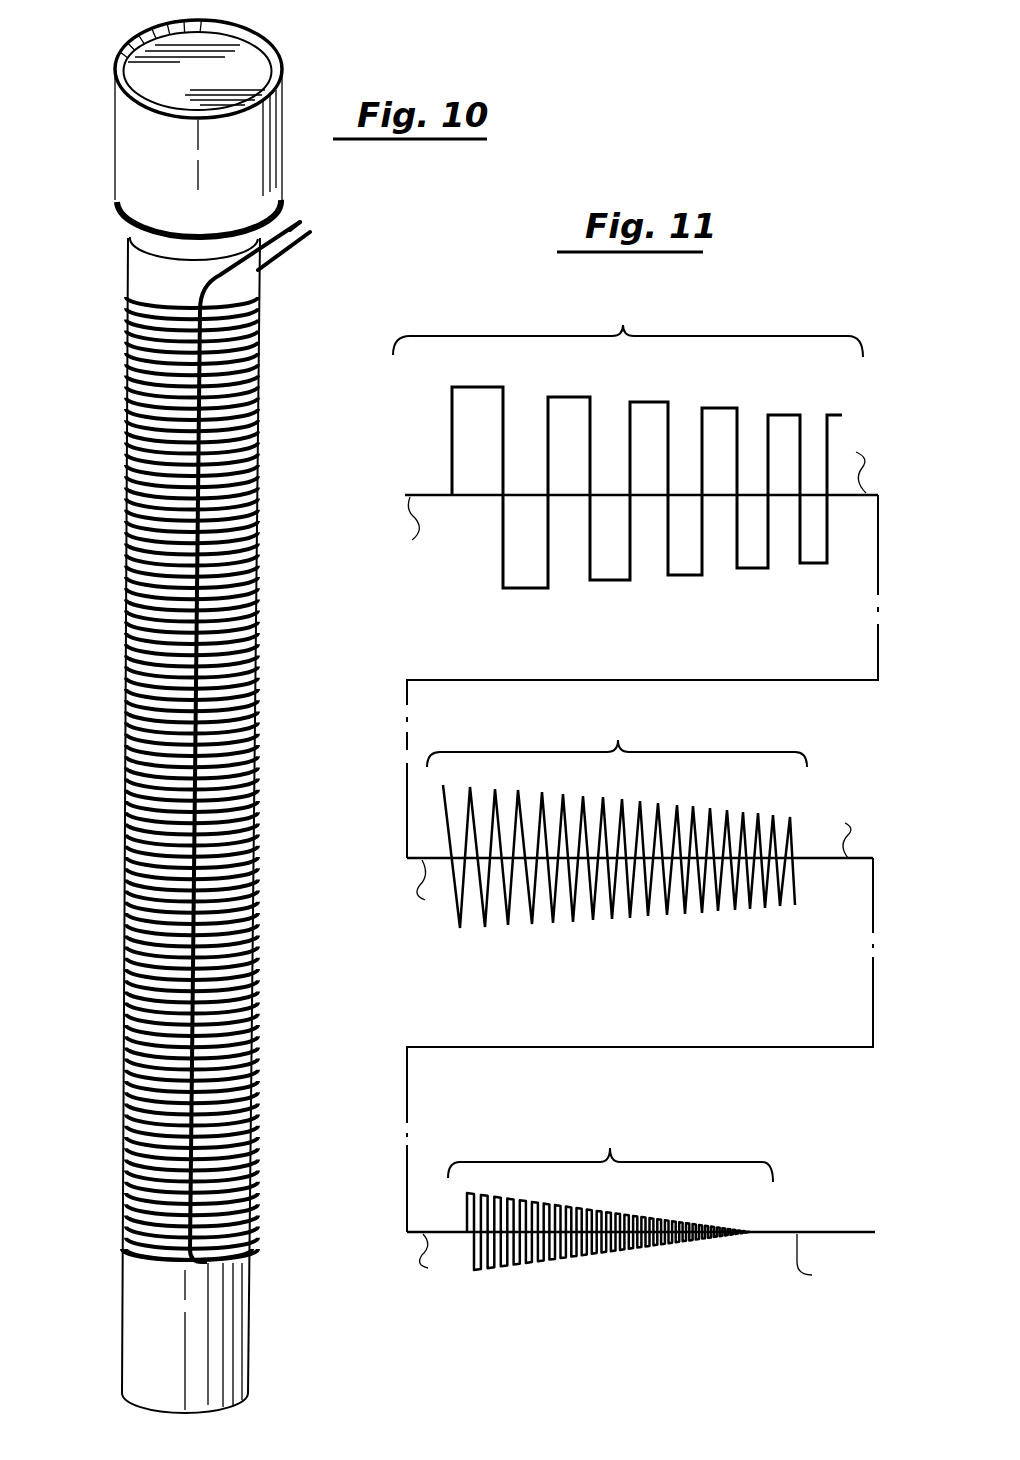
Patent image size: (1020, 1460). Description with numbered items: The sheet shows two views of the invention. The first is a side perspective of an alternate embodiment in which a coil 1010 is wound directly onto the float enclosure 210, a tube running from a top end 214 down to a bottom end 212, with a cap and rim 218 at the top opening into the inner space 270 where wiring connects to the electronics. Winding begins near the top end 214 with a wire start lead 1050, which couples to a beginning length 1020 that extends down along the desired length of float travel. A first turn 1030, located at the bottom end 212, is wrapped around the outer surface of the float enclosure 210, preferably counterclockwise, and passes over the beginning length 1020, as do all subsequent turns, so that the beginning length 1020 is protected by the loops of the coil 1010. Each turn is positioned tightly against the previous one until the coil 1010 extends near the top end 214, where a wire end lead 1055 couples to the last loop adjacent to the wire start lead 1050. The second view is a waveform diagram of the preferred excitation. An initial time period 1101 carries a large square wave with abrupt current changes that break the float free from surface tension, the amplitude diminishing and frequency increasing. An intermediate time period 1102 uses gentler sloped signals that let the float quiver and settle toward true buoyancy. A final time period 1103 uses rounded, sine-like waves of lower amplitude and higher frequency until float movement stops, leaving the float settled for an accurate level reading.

In FIG. 10, the top end 214 is at (115, 133).
In FIG. 10, the cap rim 218 is at (112, 200).
In FIG. 10, the float enclosure 210 is at (170, 283).
In FIG. 10, the inner space 270 is at (233, 65).
In FIG. 10, the wire start lead 1050 is at (288, 213).
In FIG. 10, the wire end lead 1055 is at (308, 233).
In FIG. 10, the coil 1010 is at (125, 462).
In FIG. 10, the beginning length 1020 is at (200, 900).
In FIG. 10, the first turn 1030 is at (250, 1227).
In FIG. 10, the bottom end 212 is at (253, 1368).
In FIG. 11, the initial time period 1101 is at (636, 571).
In FIG. 11, the intermediate time period 1102 is at (638, 965).
In FIG. 11, the final time period 1103 is at (637, 1201).